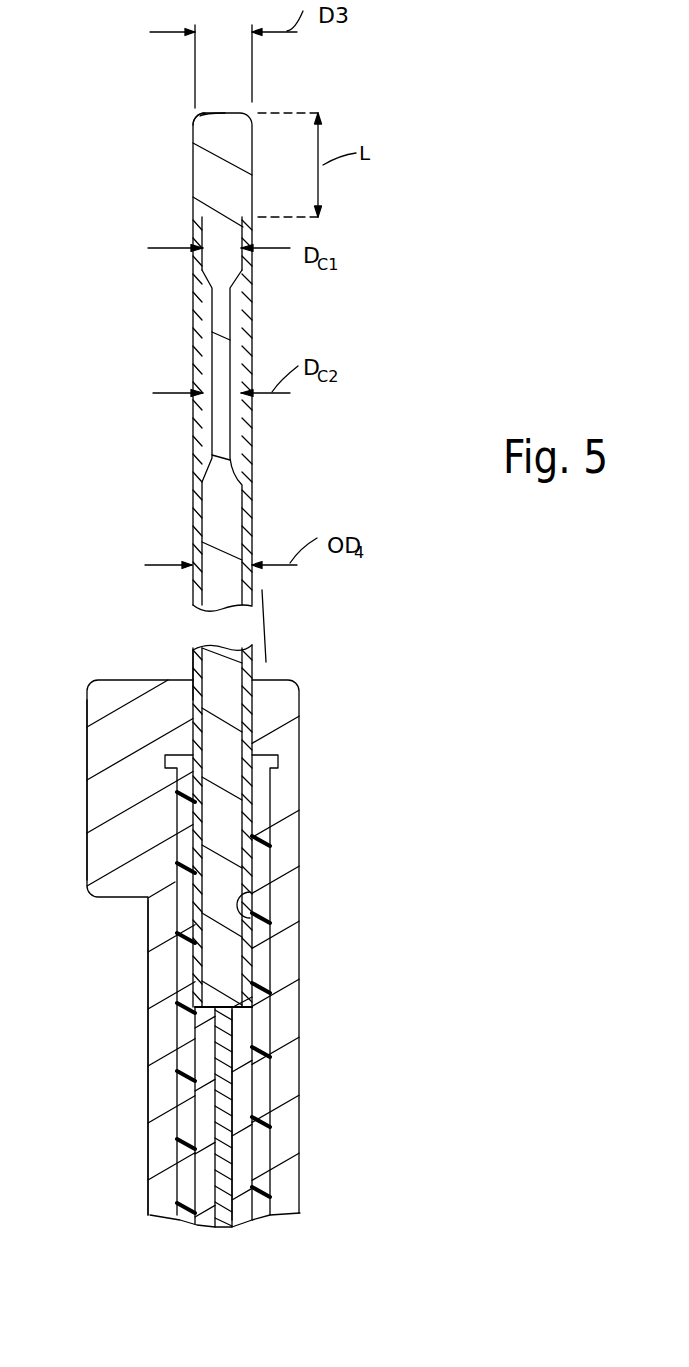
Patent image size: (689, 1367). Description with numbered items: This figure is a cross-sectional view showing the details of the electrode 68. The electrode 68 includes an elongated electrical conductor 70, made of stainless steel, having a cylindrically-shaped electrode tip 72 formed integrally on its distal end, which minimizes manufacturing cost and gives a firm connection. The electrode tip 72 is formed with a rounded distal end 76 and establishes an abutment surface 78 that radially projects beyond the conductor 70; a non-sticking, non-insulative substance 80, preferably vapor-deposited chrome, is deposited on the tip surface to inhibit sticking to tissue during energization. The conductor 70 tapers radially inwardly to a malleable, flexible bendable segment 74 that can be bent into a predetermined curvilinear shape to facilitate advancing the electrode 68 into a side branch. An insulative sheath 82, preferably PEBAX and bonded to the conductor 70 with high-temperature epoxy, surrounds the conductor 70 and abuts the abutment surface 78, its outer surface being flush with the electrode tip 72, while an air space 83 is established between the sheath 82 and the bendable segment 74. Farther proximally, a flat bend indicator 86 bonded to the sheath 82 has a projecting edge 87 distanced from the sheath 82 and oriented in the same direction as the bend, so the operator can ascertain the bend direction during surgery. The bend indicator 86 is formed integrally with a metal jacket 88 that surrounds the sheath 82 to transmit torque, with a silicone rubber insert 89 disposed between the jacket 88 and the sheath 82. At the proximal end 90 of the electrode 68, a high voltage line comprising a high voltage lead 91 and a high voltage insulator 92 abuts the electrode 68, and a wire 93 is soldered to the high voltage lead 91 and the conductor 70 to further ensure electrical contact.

The electrode 68 is at (263, 592).
The electrical conductor 70 is at (228, 508).
The electrode tip 72 is at (193, 143).
The bendable segment 74 is at (211, 422).
The rounded distal end 76 is at (227, 111).
The abutment surface 78 is at (195, 211).
The non-sticking, non-insulative substance 80 is at (195, 118).
The insulative sheath 82 is at (192, 665).
The air space 83 is at (238, 436).
The bend indicator 86 is at (98, 702).
The projecting edge 87 is at (87, 766).
The metal jacket 88 is at (153, 971).
The insert 89 is at (180, 813).
The proximal end 90 is at (248, 1000).
The high voltage lead 91 is at (227, 1207).
The high voltage insulator 92 is at (247, 1197).
The wire 93 is at (250, 892).